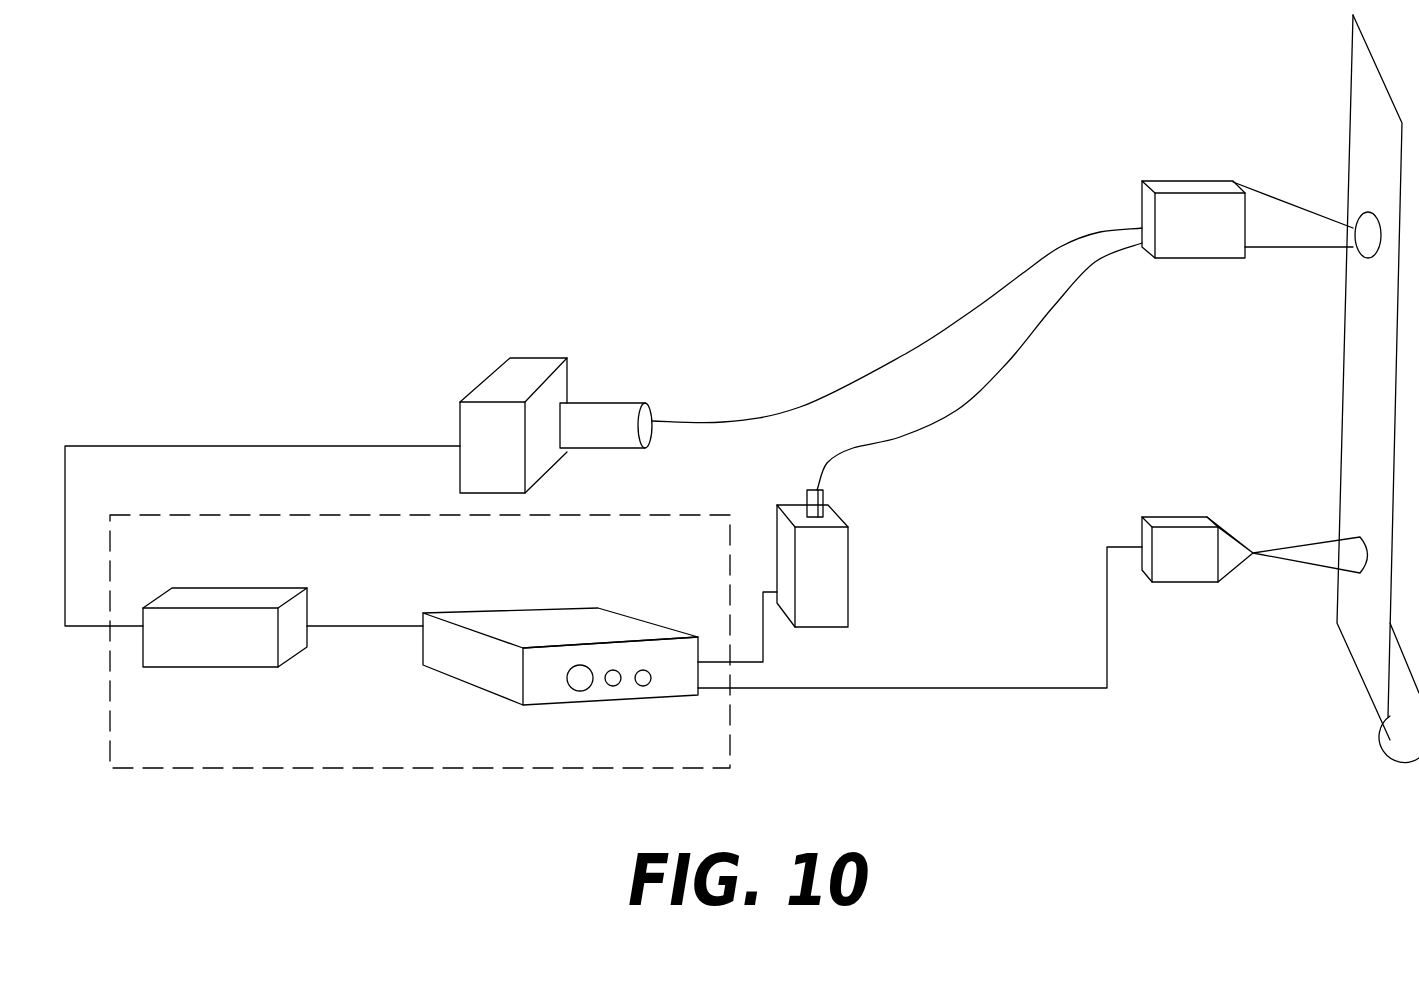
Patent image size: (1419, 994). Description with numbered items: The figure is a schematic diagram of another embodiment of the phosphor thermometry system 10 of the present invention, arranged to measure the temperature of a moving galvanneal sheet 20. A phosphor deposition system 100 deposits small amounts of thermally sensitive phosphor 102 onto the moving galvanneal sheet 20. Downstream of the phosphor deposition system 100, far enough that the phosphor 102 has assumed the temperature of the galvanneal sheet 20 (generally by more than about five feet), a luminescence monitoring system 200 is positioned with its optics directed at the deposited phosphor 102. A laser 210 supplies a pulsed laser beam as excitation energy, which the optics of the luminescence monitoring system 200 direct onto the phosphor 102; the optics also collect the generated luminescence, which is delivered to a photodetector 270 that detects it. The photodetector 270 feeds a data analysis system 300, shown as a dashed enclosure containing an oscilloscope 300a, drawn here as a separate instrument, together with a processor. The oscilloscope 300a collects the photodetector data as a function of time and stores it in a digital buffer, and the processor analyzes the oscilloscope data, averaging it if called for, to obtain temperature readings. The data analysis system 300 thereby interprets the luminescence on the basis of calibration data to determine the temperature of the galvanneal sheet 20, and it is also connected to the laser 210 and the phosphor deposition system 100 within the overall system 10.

The phosphor thermometry system 10 is at (685, 210).
The galvanneal sheet 20 is at (1368, 397).
The phosphor deposition system 100 is at (1138, 522).
The phosphor 102 is at (1370, 250).
The luminescence monitoring system 200 is at (1110, 200).
The laser 210 is at (850, 603).
The photodetector 270 is at (568, 402).
The data analysis system 300 is at (672, 512).
The oscilloscope 300a is at (177, 667).